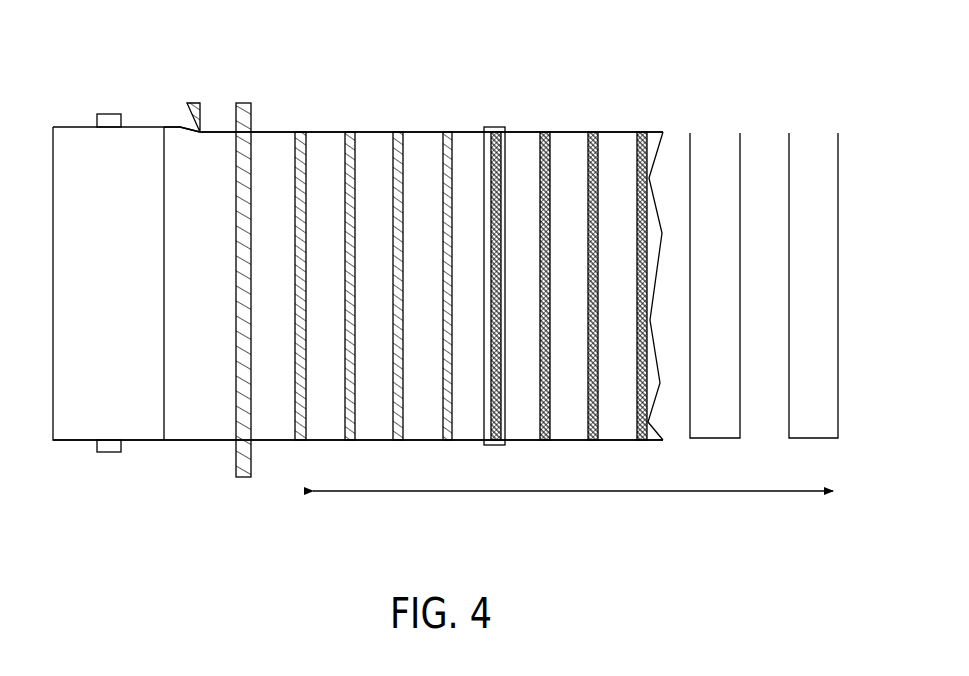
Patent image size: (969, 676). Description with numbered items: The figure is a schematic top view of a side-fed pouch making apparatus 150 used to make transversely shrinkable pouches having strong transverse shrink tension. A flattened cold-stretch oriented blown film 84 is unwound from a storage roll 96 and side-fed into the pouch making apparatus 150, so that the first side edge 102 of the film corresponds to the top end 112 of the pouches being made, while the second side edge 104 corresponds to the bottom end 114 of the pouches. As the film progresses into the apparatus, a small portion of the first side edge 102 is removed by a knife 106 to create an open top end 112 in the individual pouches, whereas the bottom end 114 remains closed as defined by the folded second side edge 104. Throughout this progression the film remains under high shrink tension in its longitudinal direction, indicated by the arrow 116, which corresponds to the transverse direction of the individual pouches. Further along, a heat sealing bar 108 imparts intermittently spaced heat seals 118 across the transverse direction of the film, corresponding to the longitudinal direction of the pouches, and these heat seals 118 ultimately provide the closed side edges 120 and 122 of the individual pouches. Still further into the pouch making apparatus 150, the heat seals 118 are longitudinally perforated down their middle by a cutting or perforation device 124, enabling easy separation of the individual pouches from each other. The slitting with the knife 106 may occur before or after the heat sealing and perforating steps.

The flattened cold-stretch oriented blown film 84 is at (77, 412).
The storage roll 96 is at (110, 112).
The first side edge 102 is at (177, 123).
The second side edge 104 is at (184, 440).
The knife 106 is at (200, 115).
The heat sealing bar 108 is at (252, 117).
The top end 112 is at (563, 132).
The bottom end 114 is at (565, 440).
The arrow 116 is at (550, 492).
The heat seals 118 is at (398, 132).
The closed side edge 120 is at (548, 322).
The closed side edge 122 is at (588, 262).
The perforation device 124 is at (497, 127).
The pouch making apparatus 150 is at (607, 89).